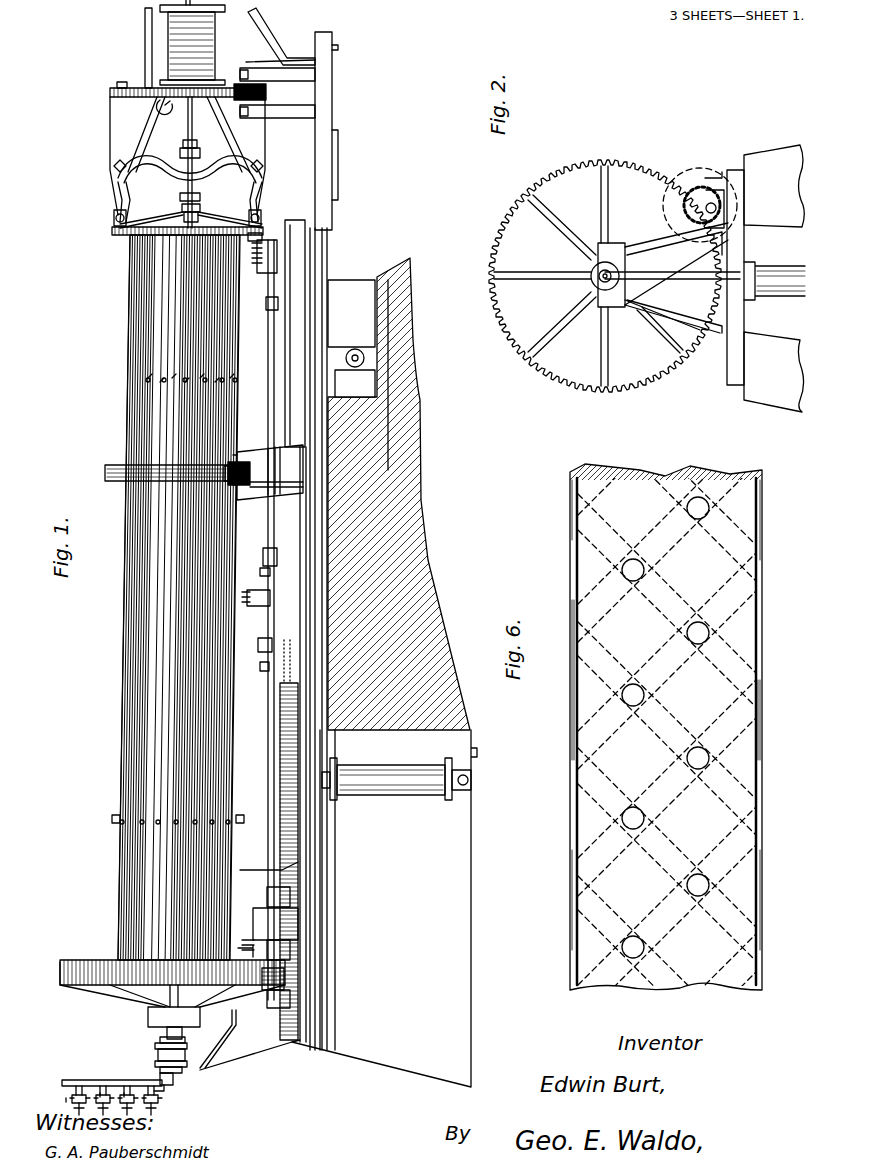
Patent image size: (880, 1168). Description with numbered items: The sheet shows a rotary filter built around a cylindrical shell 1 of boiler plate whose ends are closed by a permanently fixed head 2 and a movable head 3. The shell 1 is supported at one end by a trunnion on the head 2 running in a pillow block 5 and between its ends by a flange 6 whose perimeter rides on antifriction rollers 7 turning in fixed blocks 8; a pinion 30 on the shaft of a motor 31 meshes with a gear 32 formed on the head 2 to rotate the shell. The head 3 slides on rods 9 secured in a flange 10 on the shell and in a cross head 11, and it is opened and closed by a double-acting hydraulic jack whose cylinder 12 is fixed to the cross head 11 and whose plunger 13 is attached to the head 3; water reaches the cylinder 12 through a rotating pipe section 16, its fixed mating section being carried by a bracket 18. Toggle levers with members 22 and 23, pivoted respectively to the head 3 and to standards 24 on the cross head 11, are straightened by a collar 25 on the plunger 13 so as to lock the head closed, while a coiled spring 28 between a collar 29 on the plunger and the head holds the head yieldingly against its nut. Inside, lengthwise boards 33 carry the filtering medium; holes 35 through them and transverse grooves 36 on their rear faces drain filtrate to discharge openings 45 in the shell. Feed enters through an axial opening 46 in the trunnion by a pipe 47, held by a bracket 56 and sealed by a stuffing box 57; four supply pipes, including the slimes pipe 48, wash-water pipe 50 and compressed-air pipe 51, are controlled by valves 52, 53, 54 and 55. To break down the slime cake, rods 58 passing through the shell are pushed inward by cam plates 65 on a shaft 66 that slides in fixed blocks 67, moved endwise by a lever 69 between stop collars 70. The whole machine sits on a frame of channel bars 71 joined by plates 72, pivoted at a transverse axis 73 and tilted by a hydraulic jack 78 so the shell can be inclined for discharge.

In FIG. 1, the cylindrical shell 1 is at (130, 630).
In FIG. 1, the head 2 is at (92, 960).
In FIG. 2, the head 2 is at (560, 290).
In FIG. 1, the head 3 is at (114, 222).
In FIG. 1, the pillow block 5 is at (205, 1018).
In FIG. 2, the pillow block 5 is at (675, 305).
In FIG. 1, the flange 6 is at (108, 466).
In FIG. 1, the antifriction rollers 7 is at (242, 460).
In FIG. 1, the fixed blocks 8 is at (290, 500).
In FIG. 1, the rods 9 is at (120, 195).
In FIG. 1, the flange 10 is at (113, 233).
In FIG. 1, the cross head 11 is at (112, 90).
In FIG. 1, the cylinder 12 is at (170, 62).
In FIG. 1, the plunger 13 is at (187, 120).
In FIG. 1, the pipe section 16 is at (145, 22).
In FIG. 1, the bracket 18 is at (262, 44).
In FIG. 1, the toggle lever member 22 is at (155, 222).
In FIG. 1, the toggle lever member 23 is at (120, 170).
In FIG. 1, the standards 24 is at (142, 118).
In FIG. 1, the collar 25 is at (198, 150).
In FIG. 1, the coiled spring 28 is at (199, 204).
In FIG. 1, the collar 29 is at (181, 197).
In FIG. 1, the pinion 30 is at (286, 978).
In FIG. 2, the pinion 30 is at (700, 190).
In FIG. 1, the motor 31 is at (283, 918).
In FIG. 2, the motor 31 is at (714, 172).
In FIG. 1, the gear 32 is at (62, 962).
In FIG. 2, the gear 32 is at (497, 325).
In FIG. 6, the boards 33 is at (694, 958).
In FIG. 6, the holes or openings 35 is at (772, 758).
In FIG. 6, the grooves or channels 36 is at (574, 602).
In FIG. 1, the discharge holes or openings 45 is at (222, 380).
In FIG. 2, the axial hole or opening 46 is at (600, 310).
In FIG. 1, the pipe 47 is at (162, 1038).
In FIG. 1, the pipe 48 is at (157, 1046).
In FIG. 1, the pipe 50 is at (82, 1080).
In FIG. 1, the pipe 51 is at (74, 1104).
In FIG. 1, the valve 52 is at (167, 1086).
In FIG. 1, the valve 53 is at (123, 1095).
In FIG. 1, the valve 54 is at (99, 1095).
In FIG. 1, the valve 55 is at (75, 1092).
In FIG. 1, the bracket 56 is at (270, 1052).
In FIG. 2, the bracket 56 is at (706, 288).
In FIG. 1, the stuffing box 57 is at (158, 1060).
In FIG. 1, the rods 58 is at (262, 275).
In FIG. 1, the trips or cam plates 65 is at (268, 340).
In FIG. 1, the shaft 66 is at (279, 720).
In FIG. 1, the fixed blocks 67 is at (263, 556).
In FIG. 1, the lever 69 is at (250, 870).
In FIG. 1, the collars 70 is at (260, 570).
In FIG. 1, the longitudinal channel bars 71 is at (329, 200).
In FIG. 2, the longitudinal channel bars 71 is at (765, 278).
In FIG. 1, the plates 72 is at (334, 70).
In FIG. 1, the pivotal axis 73 is at (355, 352).
In FIG. 1, the hydraulic jack 78 is at (408, 796).
In FIG. 2, the hydraulic jack 78 is at (800, 296).